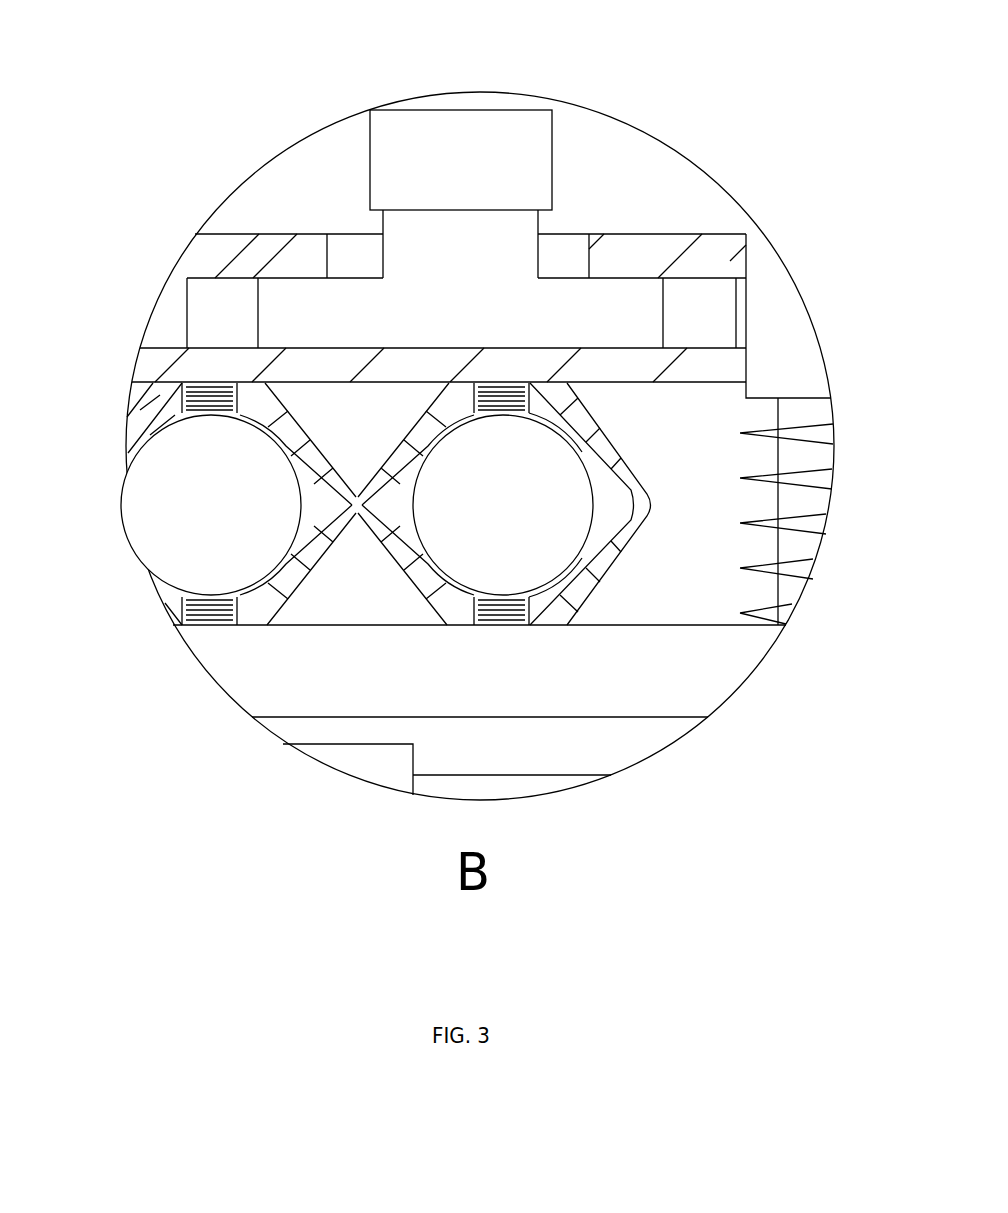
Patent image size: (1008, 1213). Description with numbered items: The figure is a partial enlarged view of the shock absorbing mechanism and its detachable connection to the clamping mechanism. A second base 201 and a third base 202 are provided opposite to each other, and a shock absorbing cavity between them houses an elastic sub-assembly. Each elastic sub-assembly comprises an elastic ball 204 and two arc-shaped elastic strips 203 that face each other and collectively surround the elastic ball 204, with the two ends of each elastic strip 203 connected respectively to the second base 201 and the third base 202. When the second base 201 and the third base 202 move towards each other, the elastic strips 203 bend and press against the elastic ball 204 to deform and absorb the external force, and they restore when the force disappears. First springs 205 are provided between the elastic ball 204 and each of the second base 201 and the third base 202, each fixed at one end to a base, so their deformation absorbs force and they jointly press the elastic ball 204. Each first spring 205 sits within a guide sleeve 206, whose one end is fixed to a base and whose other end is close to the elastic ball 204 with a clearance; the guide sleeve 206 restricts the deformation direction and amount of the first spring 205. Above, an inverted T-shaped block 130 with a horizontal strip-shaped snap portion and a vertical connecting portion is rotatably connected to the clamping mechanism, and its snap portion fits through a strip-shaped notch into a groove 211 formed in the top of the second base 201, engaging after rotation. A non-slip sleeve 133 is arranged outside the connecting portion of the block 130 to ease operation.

The block 130 is at (310, 316).
The non-slip sleeve 133 is at (437, 162).
The second base 201 is at (626, 257).
The groove 211 is at (707, 320).
The third base 202 is at (237, 665).
The elastic strip 203 is at (630, 503).
The elastic ball 204 is at (163, 517).
The first spring 205 is at (203, 609).
The guide sleeve 206 is at (183, 610).